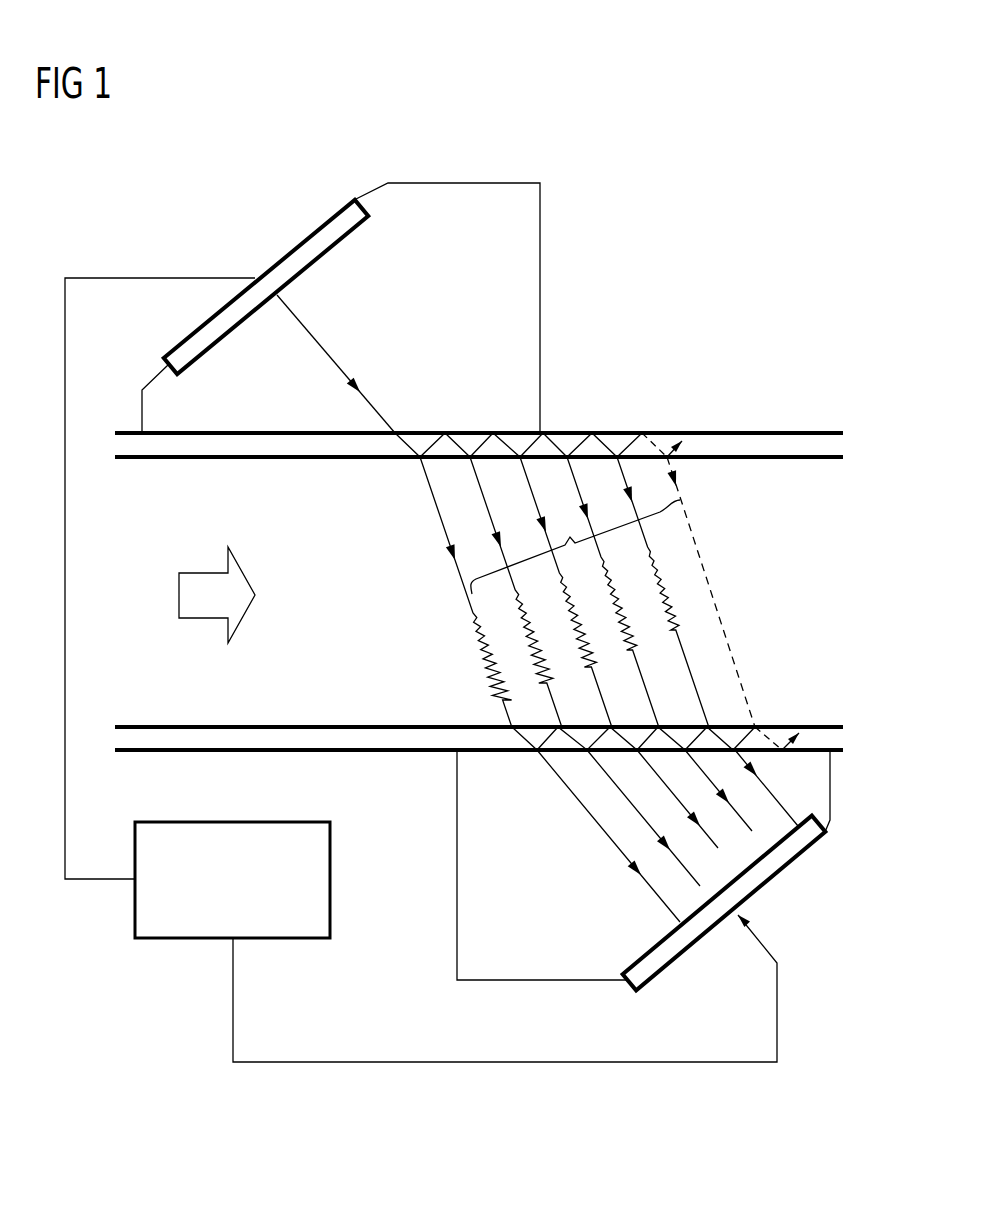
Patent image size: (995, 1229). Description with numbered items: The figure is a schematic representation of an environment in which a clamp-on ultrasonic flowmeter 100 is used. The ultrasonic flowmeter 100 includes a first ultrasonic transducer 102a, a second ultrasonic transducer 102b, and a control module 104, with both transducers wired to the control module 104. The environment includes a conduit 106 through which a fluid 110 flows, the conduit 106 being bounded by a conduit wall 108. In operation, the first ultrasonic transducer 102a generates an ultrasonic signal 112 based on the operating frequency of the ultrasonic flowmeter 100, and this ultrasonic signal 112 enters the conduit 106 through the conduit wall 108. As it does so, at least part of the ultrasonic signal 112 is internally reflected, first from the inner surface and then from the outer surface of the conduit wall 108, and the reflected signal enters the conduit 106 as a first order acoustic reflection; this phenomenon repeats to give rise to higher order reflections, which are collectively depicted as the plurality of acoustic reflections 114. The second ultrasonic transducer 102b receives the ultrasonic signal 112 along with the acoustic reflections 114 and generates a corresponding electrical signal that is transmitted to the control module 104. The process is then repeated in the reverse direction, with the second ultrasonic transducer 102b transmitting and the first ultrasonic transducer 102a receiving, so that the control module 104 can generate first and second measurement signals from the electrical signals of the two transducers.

The ultrasonic flowmeter 100 is at (790, 122).
The first ultrasonic transducer 102a is at (323, 218).
The second ultrasonic transducer 102b is at (800, 863).
The control module 104 is at (330, 880).
The conduit 106 is at (740, 432).
The conduit wall 108 is at (823, 725).
The fluid 110 is at (197, 570).
The ultrasonic signal 112 is at (325, 347).
The plurality of acoustic reflections 114 is at (680, 500).